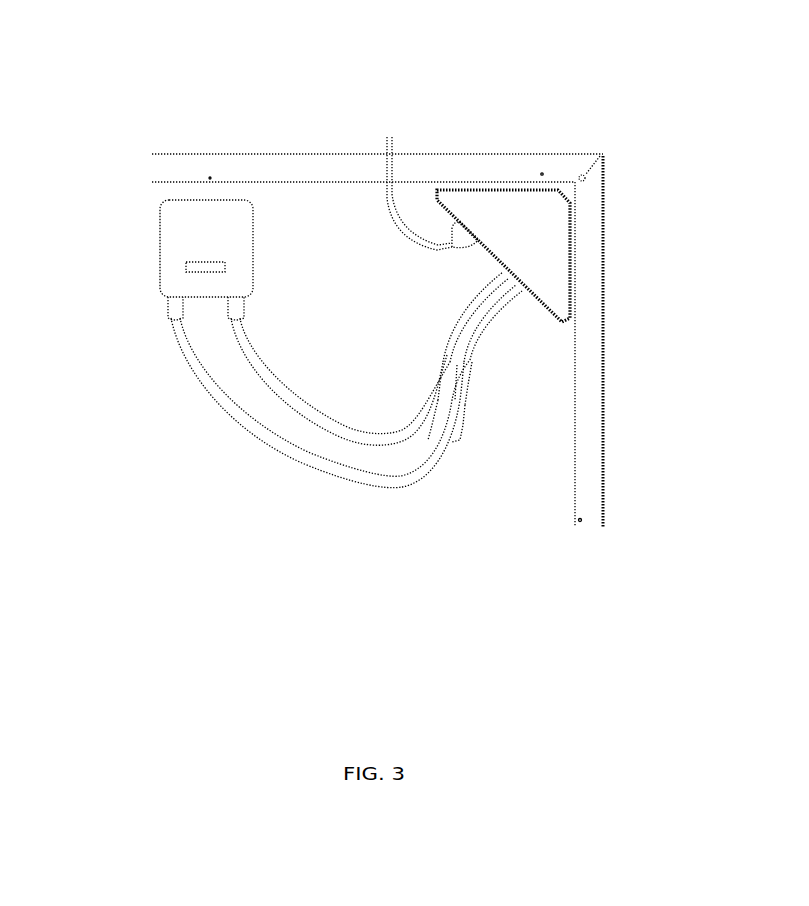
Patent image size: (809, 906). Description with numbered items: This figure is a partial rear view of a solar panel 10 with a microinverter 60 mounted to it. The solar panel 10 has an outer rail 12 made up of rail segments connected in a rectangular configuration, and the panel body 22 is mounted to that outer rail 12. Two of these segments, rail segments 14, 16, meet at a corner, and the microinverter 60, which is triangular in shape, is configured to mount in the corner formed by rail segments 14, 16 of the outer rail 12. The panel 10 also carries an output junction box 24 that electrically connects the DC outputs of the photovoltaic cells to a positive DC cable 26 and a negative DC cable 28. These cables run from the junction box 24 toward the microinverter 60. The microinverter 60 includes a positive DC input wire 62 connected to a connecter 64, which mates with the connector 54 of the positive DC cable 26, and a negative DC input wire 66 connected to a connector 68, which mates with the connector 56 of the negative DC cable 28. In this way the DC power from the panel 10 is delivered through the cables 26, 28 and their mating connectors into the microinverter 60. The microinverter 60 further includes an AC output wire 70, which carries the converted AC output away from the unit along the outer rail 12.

The solar panel 10 is at (672, 95).
The outer rail 12 is at (603, 445).
The rail segment 14 is at (603, 358).
The rail segment 16 is at (278, 154).
The panel body 22 is at (301, 501).
The output junction box 24 is at (160, 268).
The positive DC cable 26 is at (217, 402).
The negative DC cable 28 is at (258, 362).
The connector 54 is at (462, 410).
The connector 56 is at (427, 402).
The microinverter 60 is at (548, 240).
The positive DC input wire 62 is at (488, 312).
The connecter 64 is at (468, 373).
The negative DC input wire 66 is at (462, 312).
The connector 68 is at (440, 362).
The AC output wire 70 is at (392, 137).